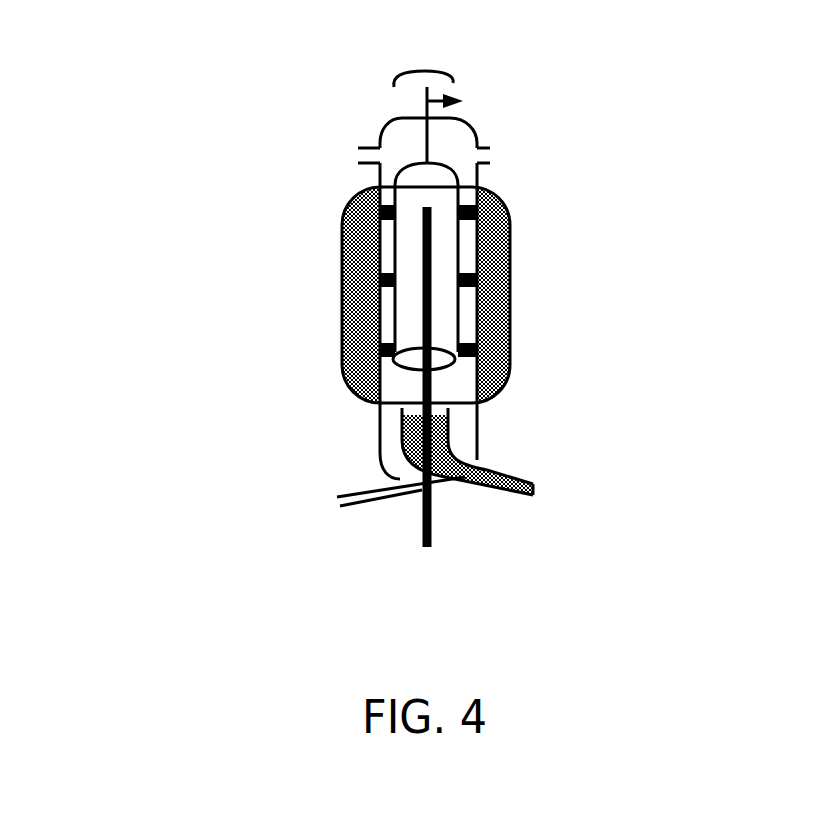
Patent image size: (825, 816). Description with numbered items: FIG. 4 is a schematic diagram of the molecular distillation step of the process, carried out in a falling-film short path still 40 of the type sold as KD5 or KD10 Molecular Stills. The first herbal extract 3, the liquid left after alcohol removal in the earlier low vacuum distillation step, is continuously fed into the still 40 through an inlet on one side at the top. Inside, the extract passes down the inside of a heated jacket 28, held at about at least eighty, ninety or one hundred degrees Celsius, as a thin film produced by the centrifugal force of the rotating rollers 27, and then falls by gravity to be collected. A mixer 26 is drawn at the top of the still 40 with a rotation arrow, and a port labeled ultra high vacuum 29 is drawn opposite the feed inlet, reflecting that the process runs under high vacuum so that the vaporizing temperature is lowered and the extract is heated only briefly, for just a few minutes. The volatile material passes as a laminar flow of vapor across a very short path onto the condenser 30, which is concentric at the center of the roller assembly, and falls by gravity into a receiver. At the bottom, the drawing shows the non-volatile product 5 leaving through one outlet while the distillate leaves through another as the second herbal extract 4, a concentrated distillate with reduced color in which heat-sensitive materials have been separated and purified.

The Mixer 26 is at (444, 100).
The first herbal extract 3 is at (222, 158).
The Ultra high vacuum 29 is at (629, 156).
The rotating rollers 27 is at (368, 281).
The heated jacket 28 is at (545, 295).
The still 40 is at (314, 353).
The Non-volatile product 5 is at (311, 509).
The second herbal extract 4 is at (576, 467).
The condenser 30 is at (438, 394).